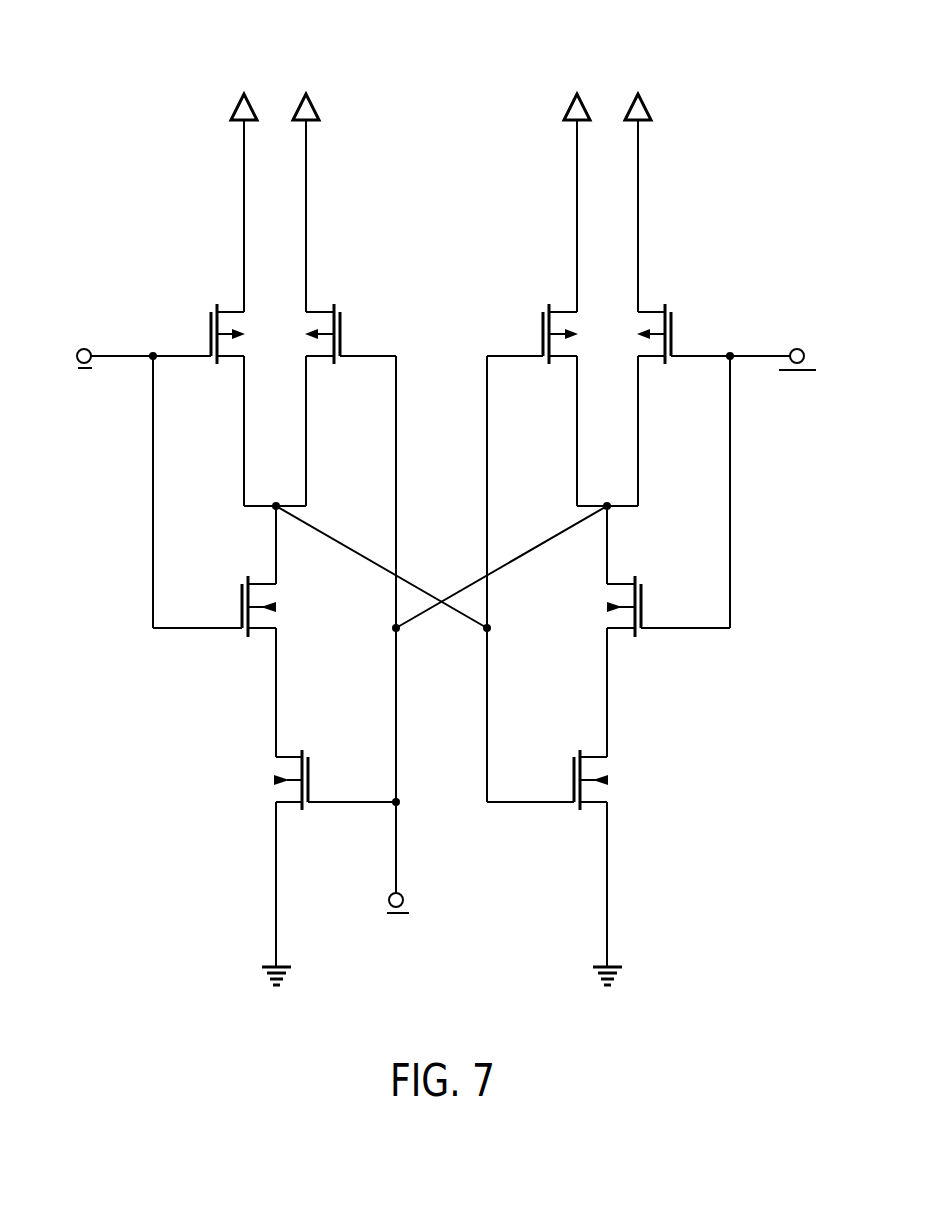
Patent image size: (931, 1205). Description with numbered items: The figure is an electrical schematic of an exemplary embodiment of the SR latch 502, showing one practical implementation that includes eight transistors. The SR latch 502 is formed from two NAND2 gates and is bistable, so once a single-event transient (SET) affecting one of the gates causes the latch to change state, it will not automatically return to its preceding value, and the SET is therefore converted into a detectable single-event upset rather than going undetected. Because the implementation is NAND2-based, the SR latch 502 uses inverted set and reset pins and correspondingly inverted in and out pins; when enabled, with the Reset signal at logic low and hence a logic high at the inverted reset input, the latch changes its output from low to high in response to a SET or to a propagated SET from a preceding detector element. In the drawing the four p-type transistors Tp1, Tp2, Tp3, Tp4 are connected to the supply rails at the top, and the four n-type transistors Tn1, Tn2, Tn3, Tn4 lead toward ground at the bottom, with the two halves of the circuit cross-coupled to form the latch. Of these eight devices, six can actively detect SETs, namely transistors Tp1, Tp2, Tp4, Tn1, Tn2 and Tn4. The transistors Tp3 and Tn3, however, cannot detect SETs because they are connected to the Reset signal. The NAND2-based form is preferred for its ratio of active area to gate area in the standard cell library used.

The SR latch 502 is at (446, 498).
The transistor Tp1 is at (210, 334).
The transistor Tp2 is at (341, 334).
The transistor Tp3 is at (671, 334).
The transistor Tp4 is at (542, 334).
The transistor Tn1 is at (274, 606).
The transistor Tn2 is at (273, 780).
The transistor Tn3 is at (606, 606).
The transistor Tn4 is at (606, 780).